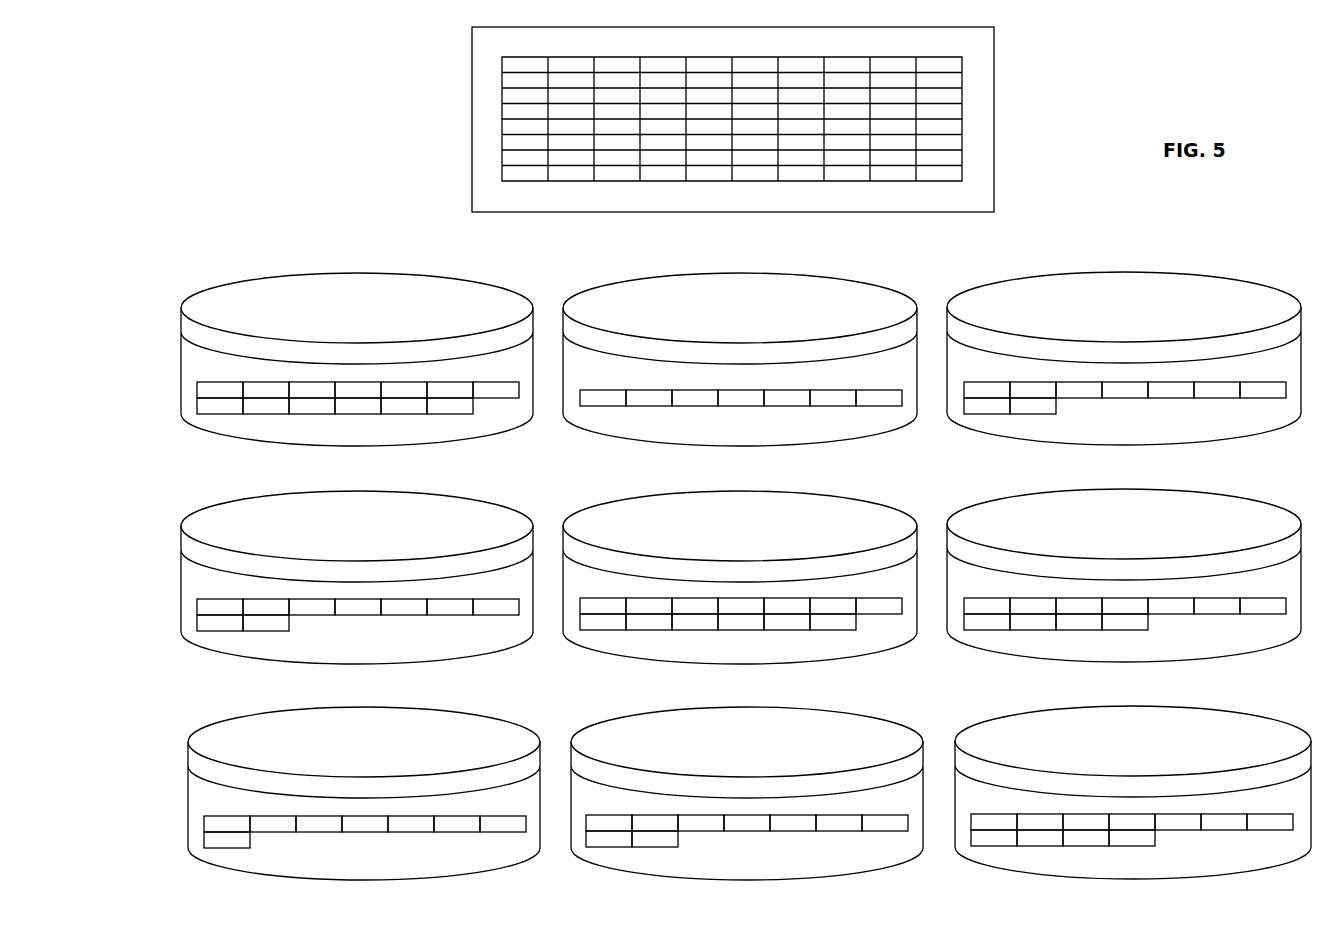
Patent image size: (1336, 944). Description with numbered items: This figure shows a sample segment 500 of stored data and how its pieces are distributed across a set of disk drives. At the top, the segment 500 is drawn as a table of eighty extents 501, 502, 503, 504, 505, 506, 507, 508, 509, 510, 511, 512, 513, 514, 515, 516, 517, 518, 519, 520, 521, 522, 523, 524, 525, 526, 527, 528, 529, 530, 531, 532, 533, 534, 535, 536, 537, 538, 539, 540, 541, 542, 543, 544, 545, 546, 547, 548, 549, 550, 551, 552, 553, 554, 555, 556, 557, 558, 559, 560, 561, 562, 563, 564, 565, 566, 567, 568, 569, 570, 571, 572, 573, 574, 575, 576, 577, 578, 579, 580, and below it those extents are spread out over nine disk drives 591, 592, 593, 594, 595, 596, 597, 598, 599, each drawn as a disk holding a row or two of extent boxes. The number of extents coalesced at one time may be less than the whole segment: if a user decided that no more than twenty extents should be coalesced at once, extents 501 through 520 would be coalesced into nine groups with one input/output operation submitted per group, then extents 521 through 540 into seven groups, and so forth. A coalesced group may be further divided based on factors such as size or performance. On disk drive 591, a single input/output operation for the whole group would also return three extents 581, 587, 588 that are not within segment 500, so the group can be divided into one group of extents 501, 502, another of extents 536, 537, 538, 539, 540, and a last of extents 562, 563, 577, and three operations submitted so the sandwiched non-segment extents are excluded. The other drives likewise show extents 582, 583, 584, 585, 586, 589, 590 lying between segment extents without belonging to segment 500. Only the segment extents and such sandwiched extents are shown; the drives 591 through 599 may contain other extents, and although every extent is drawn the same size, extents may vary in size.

The sample segment 500 is at (994, 118).
The disk drive 591 is at (357, 273).
The disk drive 592 is at (740, 273).
The disk drive 593 is at (1124, 272).
The disk drive 594 is at (357, 491).
The disk drive 595 is at (740, 491).
The disk drive 596 is at (1124, 489).
The disk drive 597 is at (364, 707).
The disk drive 598 is at (747, 707).
The disk drive 599 is at (1133, 706).
The extent 501 is at (220, 390).
The extent 502 is at (266, 390).
The extent 503 is at (603, 398).
The extent 504 is at (649, 398).
The extent 505 is at (987, 390).
The extent 506 is at (1033, 390).
The extent 507 is at (220, 607).
The extent 508 is at (266, 607).
The extent 509 is at (603, 606).
The extent 510 is at (649, 606).
The extent 511 is at (987, 606).
The extent 512 is at (1033, 606).
The extent 513 is at (227, 824).
The extent 514 is at (273, 824).
The extent 515 is at (609, 823).
The extent 516 is at (655, 823).
The extent 517 is at (994, 822).
The extent 518 is at (1040, 822).
The extent 519 is at (1086, 822).
The extent 520 is at (701, 823).
The extent 521 is at (747, 823).
The extent 522 is at (793, 823).
The extent 523 is at (319, 824).
The extent 524 is at (365, 824).
The extent 525 is at (411, 824).
The extent 526 is at (457, 824).
The extent 527 is at (695, 606).
The extent 528 is at (741, 606).
The extent 529 is at (1079, 606).
The extent 530 is at (1125, 606).
The extent 531 is at (1079, 390).
The extent 532 is at (1125, 390).
The extent 533 is at (695, 398).
The extent 534 is at (741, 398).
The extent 535 is at (787, 398).
The extent 536 is at (358, 390).
The extent 537 is at (404, 390).
The extent 538 is at (450, 390).
The extent 539 is at (496, 390).
The extent 540 is at (220, 406).
The extent 541 is at (603, 622).
The extent 542 is at (649, 622).
The extent 543 is at (695, 622).
The extent 544 is at (741, 622).
The extent 545 is at (312, 607).
The extent 546 is at (358, 607).
The extent 547 is at (404, 607).
The extent 548 is at (450, 607).
The extent 549 is at (496, 607).
The extent 550 is at (266, 623).
The extent 551 is at (1217, 390).
The extent 552 is at (833, 398).
The extent 553 is at (1171, 606).
The extent 554 is at (787, 622).
The extent 555 is at (1263, 390).
The extent 556 is at (1132, 822).
The extent 557 is at (503, 824).
The extent 558 is at (1178, 822).
The extent 559 is at (1224, 822).
The extent 560 is at (1217, 606).
The extent 561 is at (987, 406).
The extent 562 is at (358, 406).
The extent 563 is at (404, 406).
The extent 564 is at (839, 823).
The extent 565 is at (885, 823).
The extent 566 is at (994, 838).
The extent 567 is at (227, 840).
The extent 568 is at (1263, 606).
The extent 569 is at (987, 622).
The extent 570 is at (1033, 622).
The extent 571 is at (1033, 406).
The extent 572 is at (879, 398).
The extent 573 is at (833, 622).
The extent 574 is at (609, 839).
The extent 575 is at (655, 839).
The extent 576 is at (1040, 838).
The extent 577 is at (450, 406).
The extent 578 is at (1125, 622).
The extent 579 is at (1086, 838).
The extent 580 is at (1132, 838).
The extent 581 is at (312, 390).
The parity block 582 is at (1270, 822).
The parity block 583 is at (787, 606).
The parity block 584 is at (833, 606).
The parity block 585 is at (879, 606).
The parity block 586 is at (1171, 390).
The extent 587 is at (266, 406).
The extent 588 is at (312, 406).
The parity block 589 is at (220, 623).
The parity block 590 is at (1079, 622).